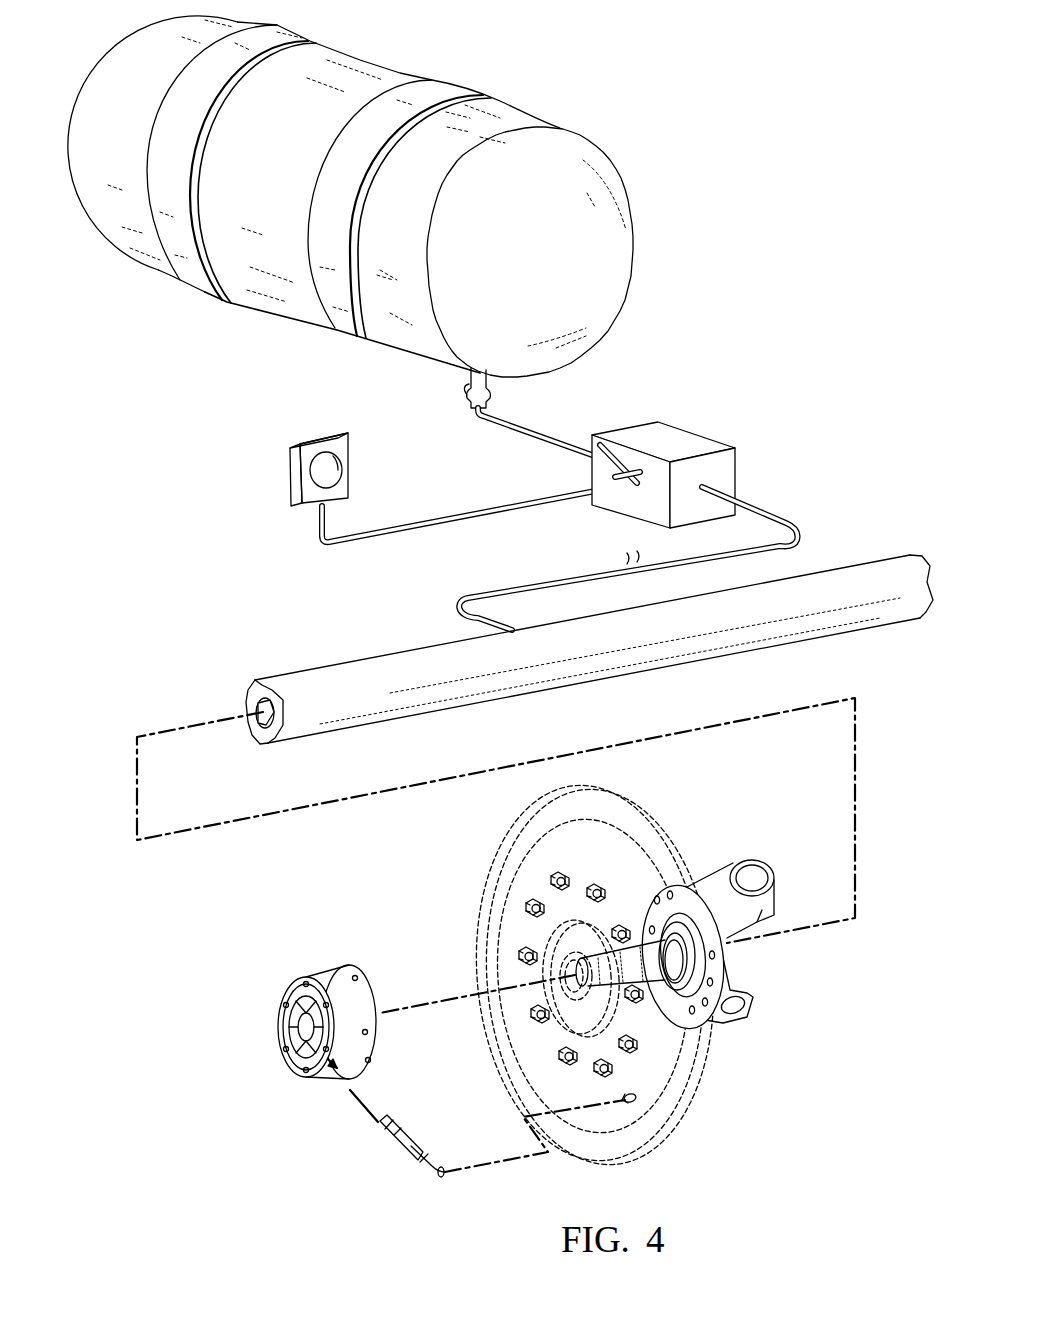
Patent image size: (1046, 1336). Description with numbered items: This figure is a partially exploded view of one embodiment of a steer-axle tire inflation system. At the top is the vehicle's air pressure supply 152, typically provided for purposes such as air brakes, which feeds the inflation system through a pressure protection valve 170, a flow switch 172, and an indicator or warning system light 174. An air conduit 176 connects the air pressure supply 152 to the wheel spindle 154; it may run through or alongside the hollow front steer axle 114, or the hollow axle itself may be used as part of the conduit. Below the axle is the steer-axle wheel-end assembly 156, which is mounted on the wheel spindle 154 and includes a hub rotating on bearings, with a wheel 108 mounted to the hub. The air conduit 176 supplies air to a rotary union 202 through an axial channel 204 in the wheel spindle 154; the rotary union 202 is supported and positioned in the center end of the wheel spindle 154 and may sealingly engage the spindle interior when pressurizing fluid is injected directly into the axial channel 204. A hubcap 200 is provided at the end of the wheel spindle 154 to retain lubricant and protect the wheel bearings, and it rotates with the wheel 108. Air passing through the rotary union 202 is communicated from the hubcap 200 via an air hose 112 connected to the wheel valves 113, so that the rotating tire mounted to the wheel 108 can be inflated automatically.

The air pressure supply 152 is at (638, 208).
The pressure protection valve 170 is at (464, 394).
The flow switch 172 is at (695, 432).
The indicator or warning system light 174 is at (290, 471).
The air conduit 176 is at (764, 501).
The steer axle 114 is at (380, 655).
The steer-axle wheel-end assembly 156 is at (444, 910).
The axial channel 204 is at (668, 886).
The wheel spindle 154 is at (747, 995).
The wheel 108 is at (700, 1068).
The wheel valves 113 is at (640, 1102).
The air hose 112 is at (432, 1182).
The rotary union 202 is at (278, 1036).
The hubcap 200 is at (290, 1045).